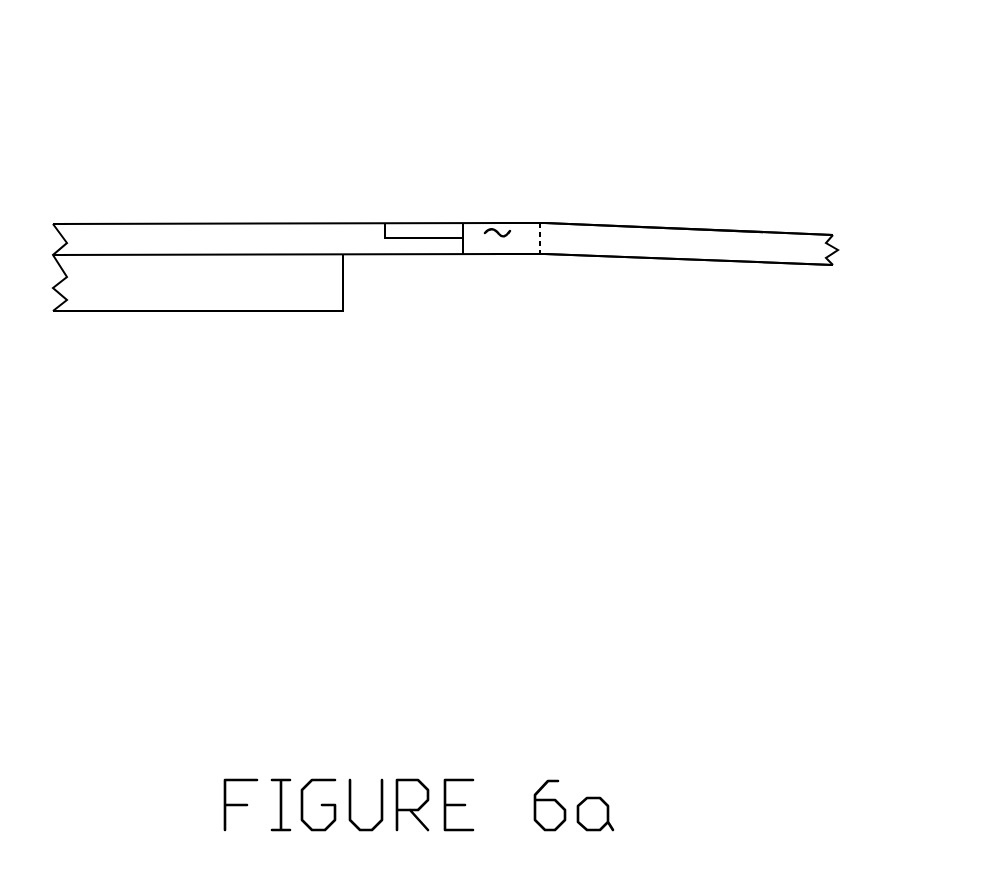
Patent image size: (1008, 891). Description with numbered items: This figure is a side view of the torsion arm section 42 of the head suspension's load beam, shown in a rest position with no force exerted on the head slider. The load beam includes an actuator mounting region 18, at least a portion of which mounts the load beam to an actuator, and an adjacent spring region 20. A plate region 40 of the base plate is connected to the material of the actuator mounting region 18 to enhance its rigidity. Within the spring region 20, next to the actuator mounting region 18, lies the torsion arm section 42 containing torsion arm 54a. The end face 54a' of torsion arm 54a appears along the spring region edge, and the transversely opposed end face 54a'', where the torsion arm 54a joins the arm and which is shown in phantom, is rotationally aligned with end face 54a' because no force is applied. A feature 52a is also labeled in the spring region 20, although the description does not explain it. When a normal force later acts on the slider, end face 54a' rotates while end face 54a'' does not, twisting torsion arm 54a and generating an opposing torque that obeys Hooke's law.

The actuator mounting region 18 is at (170, 224).
The spring region 20 is at (672, 195).
The plate region 40 is at (205, 312).
The torsion arm section 42 is at (545, 400).
The etched pocket 52a is at (412, 253).
The torsion arm 54a is at (536, 310).
The end face of torsion arm 54a' is at (514, 128).
The transversely opposed end face of torsion arm 54a'' is at (592, 169).